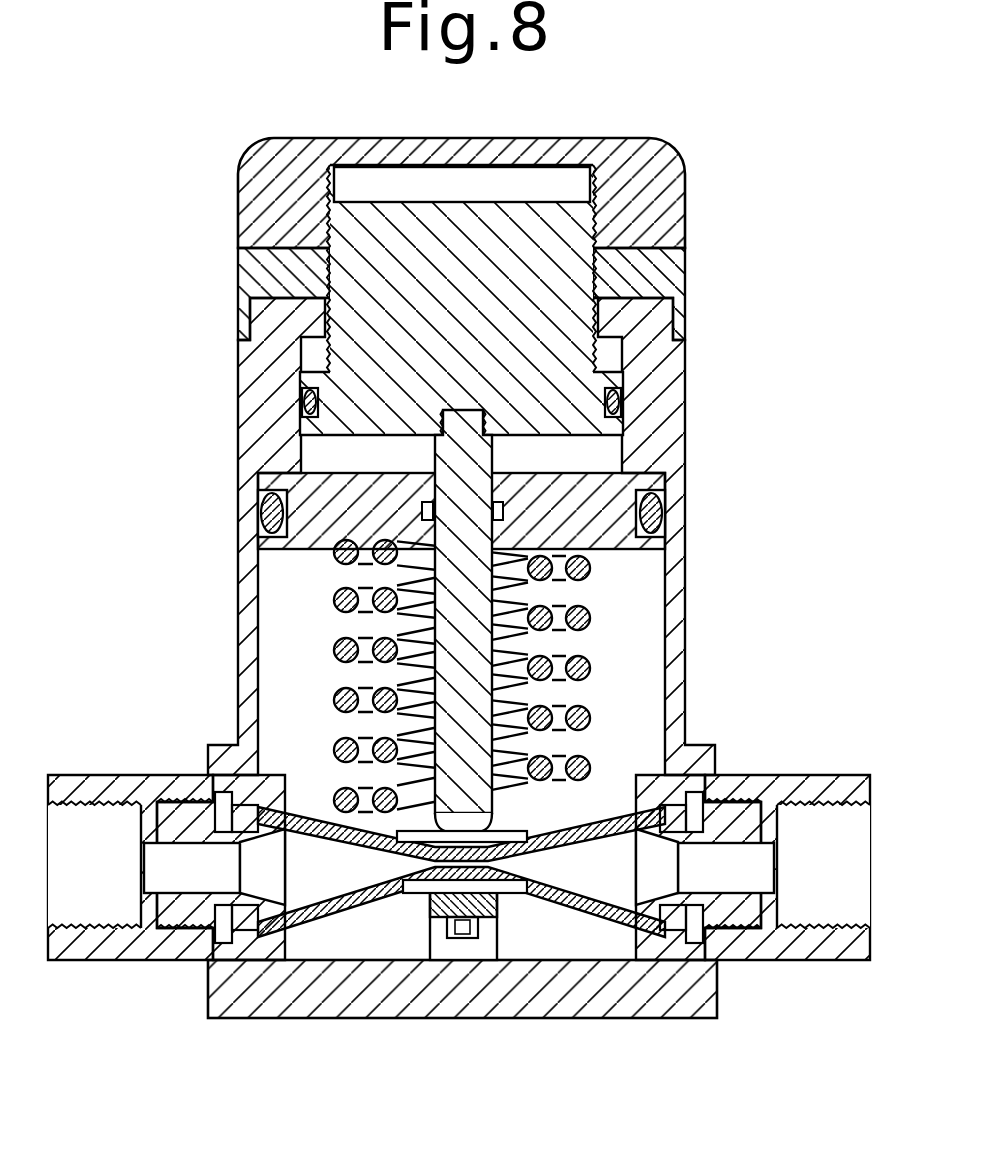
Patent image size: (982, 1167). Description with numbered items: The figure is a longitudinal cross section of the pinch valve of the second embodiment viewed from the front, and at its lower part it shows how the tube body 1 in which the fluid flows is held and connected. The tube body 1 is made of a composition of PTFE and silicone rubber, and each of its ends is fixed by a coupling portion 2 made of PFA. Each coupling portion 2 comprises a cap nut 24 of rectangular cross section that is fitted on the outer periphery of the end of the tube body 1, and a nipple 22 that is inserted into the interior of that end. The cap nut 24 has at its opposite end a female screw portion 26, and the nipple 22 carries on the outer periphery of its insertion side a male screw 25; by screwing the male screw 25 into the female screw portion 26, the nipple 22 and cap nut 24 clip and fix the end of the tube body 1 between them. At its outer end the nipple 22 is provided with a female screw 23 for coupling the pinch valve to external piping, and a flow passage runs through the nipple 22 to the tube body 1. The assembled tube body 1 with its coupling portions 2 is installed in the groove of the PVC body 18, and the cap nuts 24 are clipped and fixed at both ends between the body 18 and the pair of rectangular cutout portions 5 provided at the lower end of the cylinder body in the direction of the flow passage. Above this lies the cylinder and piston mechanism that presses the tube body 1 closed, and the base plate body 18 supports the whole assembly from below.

The tube body 1 is at (607, 807).
The coupling portion 2 is at (776, 852).
The cutout portion 5 is at (228, 774).
The body 18 is at (462, 995).
The nipple 22 is at (810, 823).
The female screw 23 is at (813, 927).
The cap nut 24 is at (719, 878).
The male screw 25 is at (720, 927).
The female screw portion 26 is at (712, 925).